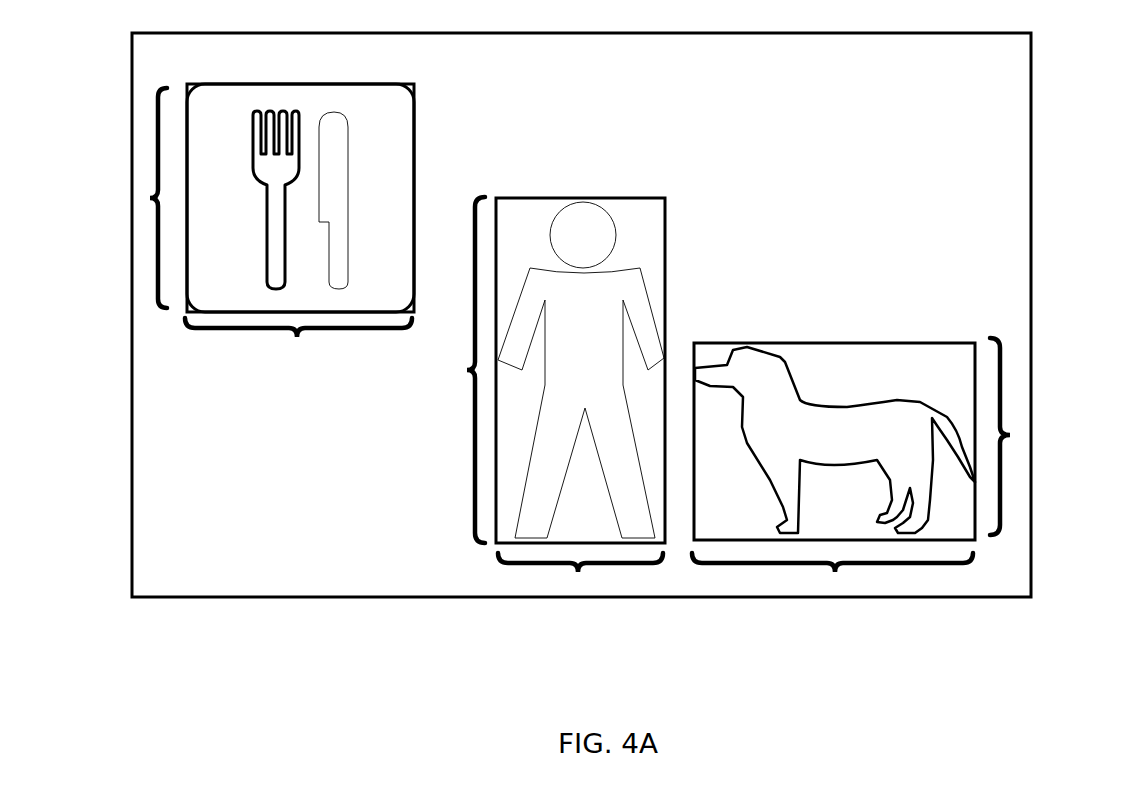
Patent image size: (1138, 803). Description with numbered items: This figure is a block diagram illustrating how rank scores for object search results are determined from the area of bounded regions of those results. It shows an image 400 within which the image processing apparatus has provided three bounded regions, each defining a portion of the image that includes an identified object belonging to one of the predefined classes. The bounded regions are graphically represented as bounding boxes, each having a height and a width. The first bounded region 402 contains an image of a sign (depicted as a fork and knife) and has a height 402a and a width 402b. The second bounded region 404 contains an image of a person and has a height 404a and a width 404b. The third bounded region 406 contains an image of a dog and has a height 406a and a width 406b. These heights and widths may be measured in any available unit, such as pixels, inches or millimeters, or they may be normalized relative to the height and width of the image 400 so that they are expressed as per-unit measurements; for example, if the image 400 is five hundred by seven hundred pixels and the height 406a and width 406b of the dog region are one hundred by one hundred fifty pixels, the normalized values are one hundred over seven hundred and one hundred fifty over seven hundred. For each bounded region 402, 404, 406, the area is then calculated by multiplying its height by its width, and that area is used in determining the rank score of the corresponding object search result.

The image 400 is at (1031, 178).
The bounded region 402 is at (415, 120).
The height 402a is at (150, 198).
The width 402b is at (297, 337).
The bounded region 404 is at (665, 215).
The height 404a is at (467, 370).
The width 404b is at (578, 572).
The bounded region 406 is at (867, 343).
The height 406a is at (1010, 435).
The width 406b is at (835, 572).